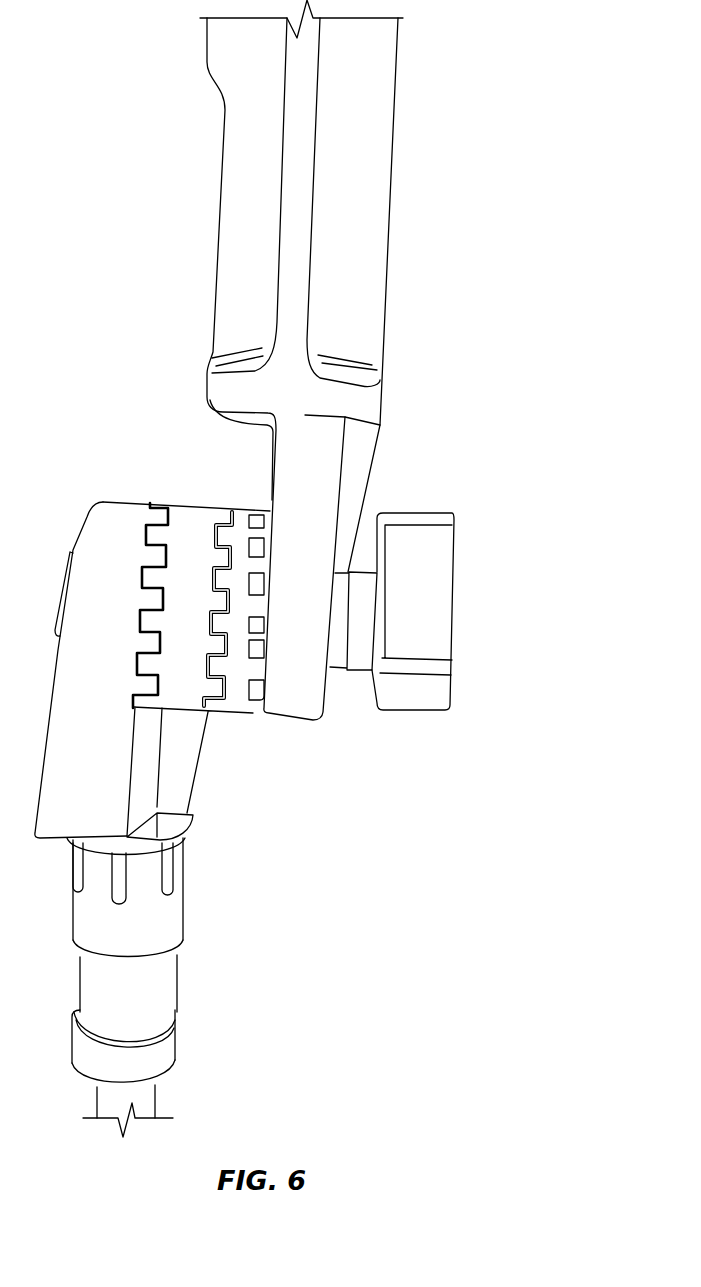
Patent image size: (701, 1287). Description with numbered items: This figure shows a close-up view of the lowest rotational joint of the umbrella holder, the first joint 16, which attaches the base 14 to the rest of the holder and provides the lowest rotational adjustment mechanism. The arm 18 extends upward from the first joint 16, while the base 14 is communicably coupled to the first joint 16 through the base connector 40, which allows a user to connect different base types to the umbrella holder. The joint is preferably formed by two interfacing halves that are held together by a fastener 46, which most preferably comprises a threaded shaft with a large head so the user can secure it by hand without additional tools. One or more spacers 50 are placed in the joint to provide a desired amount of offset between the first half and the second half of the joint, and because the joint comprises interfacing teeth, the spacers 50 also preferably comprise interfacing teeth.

The base 14 is at (175, 1097).
The first joint 16 is at (489, 640).
The arm 18 is at (378, 157).
The base connector 40 is at (190, 983).
The fastener 46 is at (443, 522).
The spacers 50 is at (242, 515).